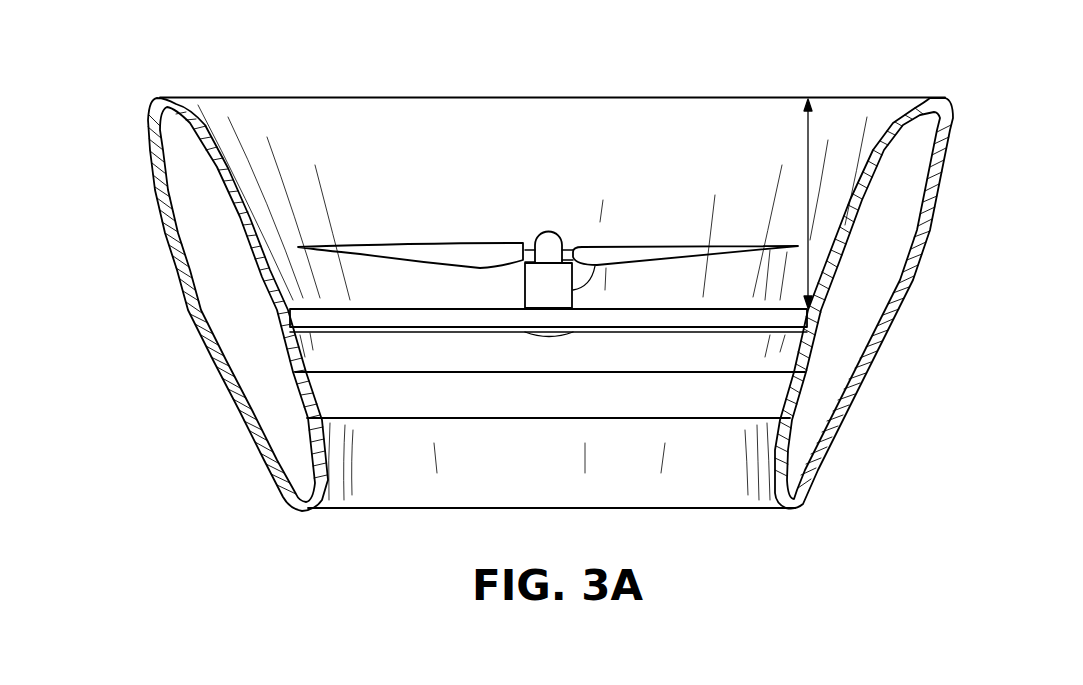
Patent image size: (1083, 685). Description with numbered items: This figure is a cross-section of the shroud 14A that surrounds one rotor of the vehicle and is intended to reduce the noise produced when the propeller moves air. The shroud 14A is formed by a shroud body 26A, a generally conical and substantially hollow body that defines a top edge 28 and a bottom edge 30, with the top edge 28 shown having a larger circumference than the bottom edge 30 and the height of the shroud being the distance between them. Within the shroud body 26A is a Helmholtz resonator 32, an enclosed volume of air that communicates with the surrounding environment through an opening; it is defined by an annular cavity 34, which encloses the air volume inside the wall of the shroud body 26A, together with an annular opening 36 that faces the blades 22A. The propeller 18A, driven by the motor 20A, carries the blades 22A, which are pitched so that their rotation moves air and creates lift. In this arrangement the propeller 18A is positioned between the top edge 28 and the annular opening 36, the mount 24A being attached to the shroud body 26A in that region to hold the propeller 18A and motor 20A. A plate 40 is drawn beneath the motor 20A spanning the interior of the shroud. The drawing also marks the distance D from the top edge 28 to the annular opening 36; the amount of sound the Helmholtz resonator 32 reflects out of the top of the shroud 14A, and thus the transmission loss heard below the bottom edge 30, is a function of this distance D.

The shroud 14A is at (160, 207).
The shroud body 26A is at (528, 304).
The top edge 28 is at (160, 97).
The bottom edge 30 is at (299, 511).
The Helmholtz resonator 32 is at (848, 315).
The annular cavity 34 is at (253, 355).
The annular opening 36 is at (333, 393).
The plate 40 is at (738, 333).
The propeller 18A is at (523, 233).
The motor 20A is at (603, 297).
The blades 22A is at (733, 244).
The mount 24A is at (407, 302).
The distance D is at (808, 138).